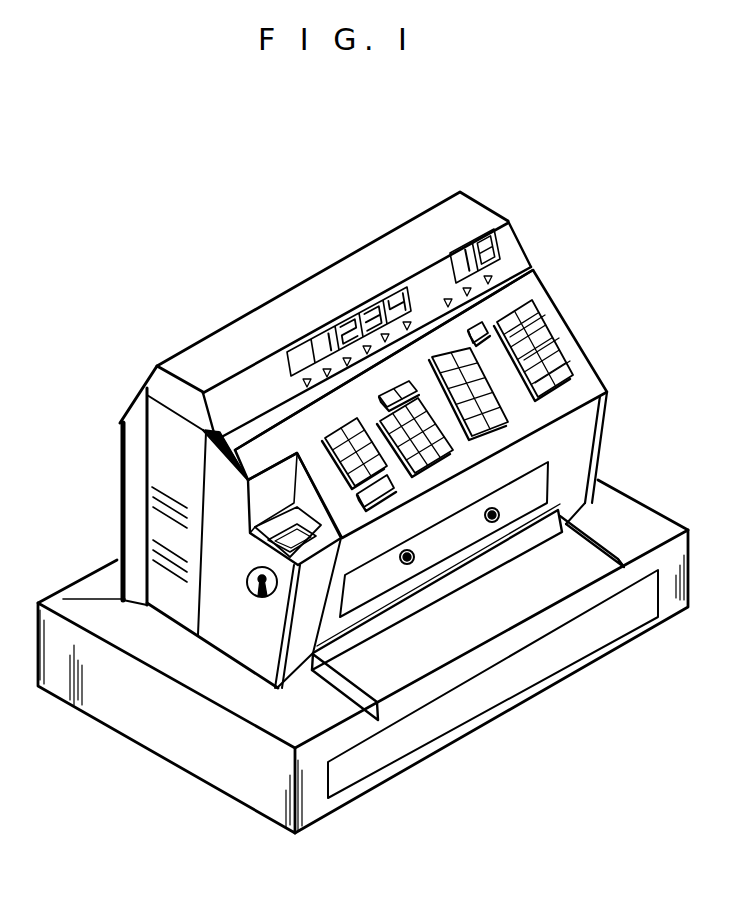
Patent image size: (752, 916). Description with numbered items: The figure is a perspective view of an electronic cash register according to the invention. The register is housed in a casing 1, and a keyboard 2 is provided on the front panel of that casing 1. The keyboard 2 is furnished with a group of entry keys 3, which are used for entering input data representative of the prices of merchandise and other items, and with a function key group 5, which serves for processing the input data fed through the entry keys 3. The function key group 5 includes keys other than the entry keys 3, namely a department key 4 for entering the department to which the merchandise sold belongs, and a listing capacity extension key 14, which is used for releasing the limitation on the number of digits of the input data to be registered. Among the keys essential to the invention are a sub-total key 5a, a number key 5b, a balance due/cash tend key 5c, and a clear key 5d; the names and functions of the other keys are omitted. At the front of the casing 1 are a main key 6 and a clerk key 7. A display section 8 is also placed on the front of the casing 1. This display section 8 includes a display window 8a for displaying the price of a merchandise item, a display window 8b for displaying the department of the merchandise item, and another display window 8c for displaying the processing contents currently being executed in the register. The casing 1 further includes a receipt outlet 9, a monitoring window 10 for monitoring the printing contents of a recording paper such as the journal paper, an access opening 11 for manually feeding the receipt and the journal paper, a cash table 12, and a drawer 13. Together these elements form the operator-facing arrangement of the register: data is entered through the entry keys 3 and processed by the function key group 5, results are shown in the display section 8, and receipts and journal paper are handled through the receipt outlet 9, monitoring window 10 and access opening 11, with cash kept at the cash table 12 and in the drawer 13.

The casing 1 is at (132, 480).
The keyboard 2 is at (531, 267).
The entry keys 3 is at (447, 470).
The department key 4 is at (505, 405).
The function key group 5 is at (558, 340).
The sub-total key 5a is at (525, 349).
The number (#) key 5b is at (540, 333).
The balance due/cash tend key 5c is at (545, 377).
The clear key 5d is at (401, 456).
The main key 6 is at (414, 555).
The clerk key 7 is at (499, 513).
The display section 8 is at (505, 238).
The display window 8a is at (364, 304).
The display window 8b is at (450, 262).
The display window 8c is at (303, 383).
The receipt outlet 9 is at (245, 542).
The monitoring window 10 is at (303, 543).
The access opening 11 is at (262, 597).
The cash table 12 is at (602, 560).
The drawer 13 is at (613, 623).
The listing capacity extension key 14 is at (483, 340).